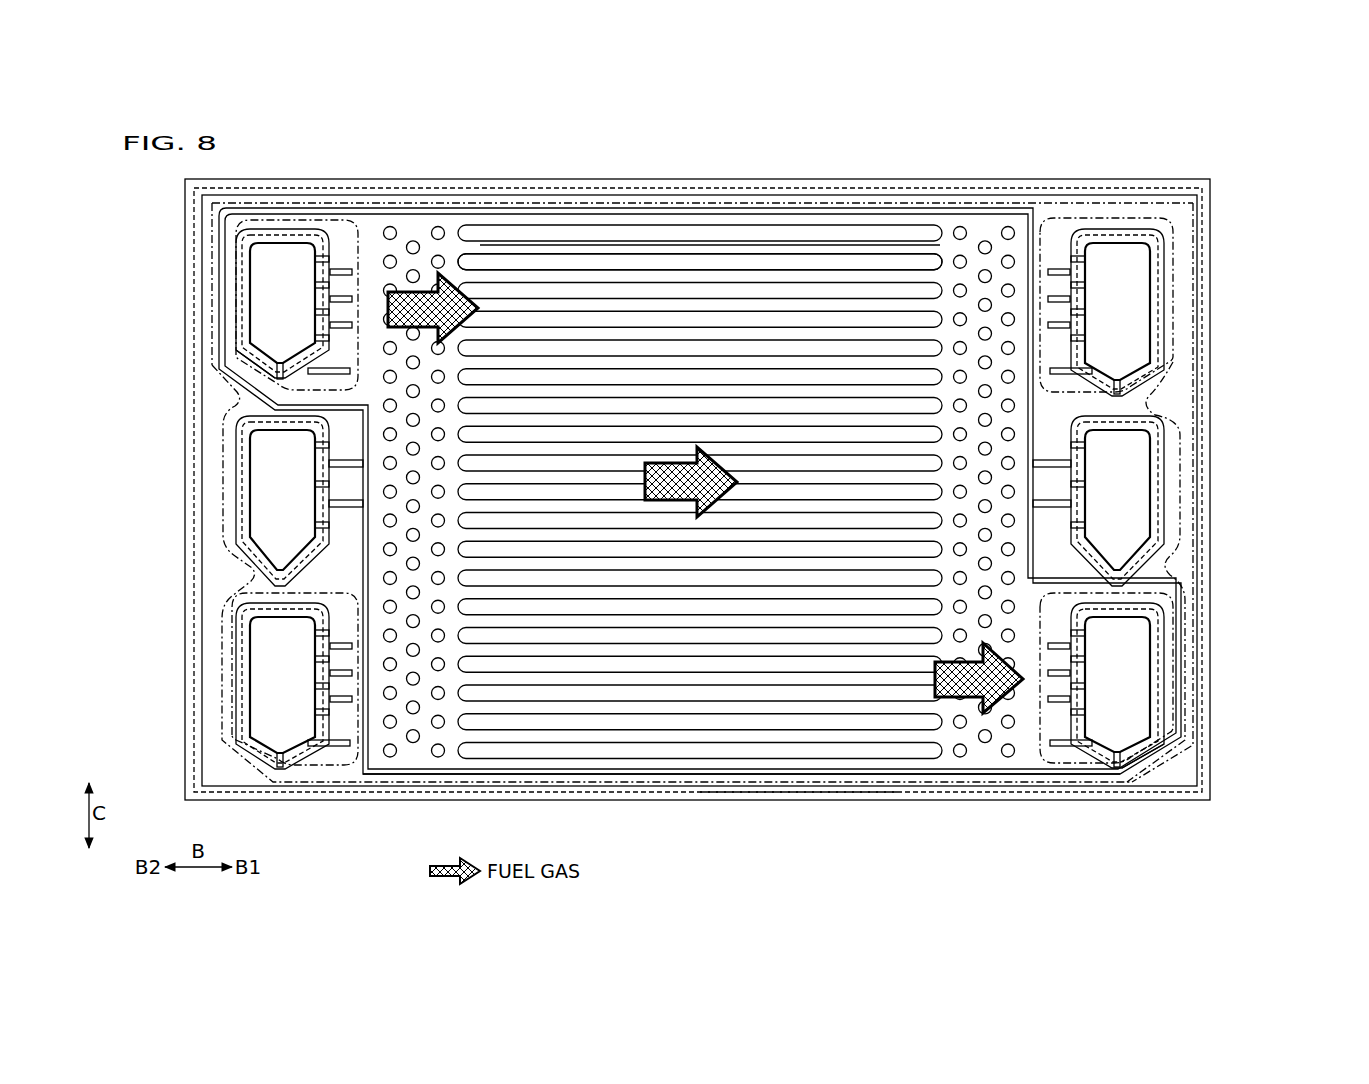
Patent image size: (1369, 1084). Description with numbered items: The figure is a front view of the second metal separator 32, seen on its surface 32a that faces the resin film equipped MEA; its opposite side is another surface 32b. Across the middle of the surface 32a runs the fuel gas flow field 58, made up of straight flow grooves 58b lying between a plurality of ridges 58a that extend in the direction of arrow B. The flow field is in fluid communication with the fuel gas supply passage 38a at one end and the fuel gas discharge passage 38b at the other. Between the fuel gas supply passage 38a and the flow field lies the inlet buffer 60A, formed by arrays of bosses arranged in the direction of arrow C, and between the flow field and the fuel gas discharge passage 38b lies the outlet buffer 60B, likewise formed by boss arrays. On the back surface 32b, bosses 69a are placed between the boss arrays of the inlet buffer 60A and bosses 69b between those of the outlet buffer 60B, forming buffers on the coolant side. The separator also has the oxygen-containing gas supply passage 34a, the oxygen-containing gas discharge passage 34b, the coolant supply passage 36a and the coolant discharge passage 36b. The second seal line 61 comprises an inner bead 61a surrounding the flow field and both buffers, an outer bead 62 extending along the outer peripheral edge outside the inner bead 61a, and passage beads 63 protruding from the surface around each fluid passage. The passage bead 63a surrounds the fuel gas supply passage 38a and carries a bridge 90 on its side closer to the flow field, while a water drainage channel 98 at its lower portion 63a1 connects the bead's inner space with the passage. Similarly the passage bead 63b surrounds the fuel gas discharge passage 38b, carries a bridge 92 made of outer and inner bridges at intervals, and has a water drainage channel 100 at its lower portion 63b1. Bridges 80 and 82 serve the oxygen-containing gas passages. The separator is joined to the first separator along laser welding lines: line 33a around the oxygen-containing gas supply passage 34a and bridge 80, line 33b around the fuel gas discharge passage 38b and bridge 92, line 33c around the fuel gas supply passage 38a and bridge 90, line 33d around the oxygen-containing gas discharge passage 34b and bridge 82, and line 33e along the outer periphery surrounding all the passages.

The second metal separator 32 is at (1127, 146).
The surface 32a is at (1186, 764).
The another surface 32b is at (1180, 776).
The laser welding line 33a is at (1193, 203).
The laser welding line 33b is at (1192, 692).
The laser welding line 33c is at (220, 343).
The laser welding line 33d is at (224, 605).
The laser welding line 33e is at (703, 203).
The oxygen-containing gas supply passage 34a is at (1130, 270).
The oxygen-containing gas discharge passage 34b is at (262, 640).
The coolant supply passage 36a is at (1135, 471).
The coolant discharge passage 36b is at (268, 465).
The fuel gas supply passage 38a is at (268, 262).
The fuel gas discharge passage 38b is at (1130, 650).
The fuel gas flow field 58 is at (517, 152).
The ridges 58a is at (530, 262).
The straight flow grooves 58b is at (595, 245).
The inlet buffer 60A is at (438, 226).
The outlet buffer 60B is at (1008, 226).
The second seal line 61 is at (930, 846).
The inner bead 61a is at (772, 775).
The outer bead 62 is at (821, 793).
The passage beads 63 is at (235, 500).
The passage bead 63a is at (233, 277).
The lower portion 63a1 is at (247, 370).
The passage bead 63b is at (1068, 720).
The lower portion 63b1 is at (1145, 742).
The bosses 69a is at (412, 743).
The bosses 69b is at (985, 743).
The bridge 80 is at (1055, 246).
The bridge 82 is at (333, 757).
The bridge 90 is at (345, 243).
The bridge 92 is at (1060, 752).
The water drainage channel 98 is at (278, 372).
The water drainage channel 100 is at (1114, 740).